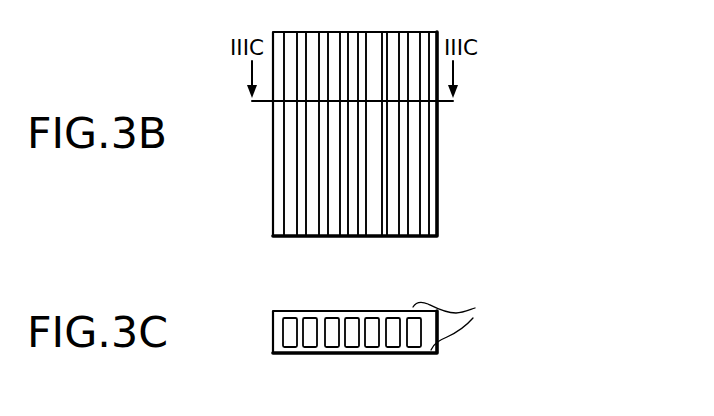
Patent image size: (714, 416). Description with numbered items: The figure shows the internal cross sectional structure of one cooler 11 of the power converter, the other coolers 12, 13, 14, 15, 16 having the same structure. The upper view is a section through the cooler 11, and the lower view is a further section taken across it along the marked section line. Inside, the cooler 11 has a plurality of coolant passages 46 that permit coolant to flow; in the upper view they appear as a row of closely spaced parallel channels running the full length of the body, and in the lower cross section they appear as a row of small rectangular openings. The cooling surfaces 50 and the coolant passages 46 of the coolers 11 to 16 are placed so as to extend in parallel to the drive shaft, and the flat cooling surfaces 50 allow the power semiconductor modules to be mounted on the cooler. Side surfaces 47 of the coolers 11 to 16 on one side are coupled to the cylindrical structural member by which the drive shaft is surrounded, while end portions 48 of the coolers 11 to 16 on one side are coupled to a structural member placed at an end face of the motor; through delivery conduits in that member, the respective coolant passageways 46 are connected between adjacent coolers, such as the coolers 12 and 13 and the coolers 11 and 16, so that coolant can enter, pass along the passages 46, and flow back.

In FIG. 3B, the coolant passages 46 is at (358, 151).
In FIG. 3C, the coolant passages 46 is at (292, 321).
In FIG. 3B, the end portions 48 is at (372, 33).
In FIG. 3C, the side surfaces 47 is at (435, 325).
In FIG. 3C, the cooling surfaces 50 is at (461, 321).
In FIG. 3C, the cooler 11 is at (444, 299).
In FIG. 3C, the cooler 12 is at (310, 332).
In FIG. 3C, the cooler 13 is at (332, 332).
In FIG. 3C, the cooler 14 is at (352, 332).
In FIG. 3C, the cooler 15 is at (372, 332).
In FIG. 3C, the cooler 16 is at (393, 332).